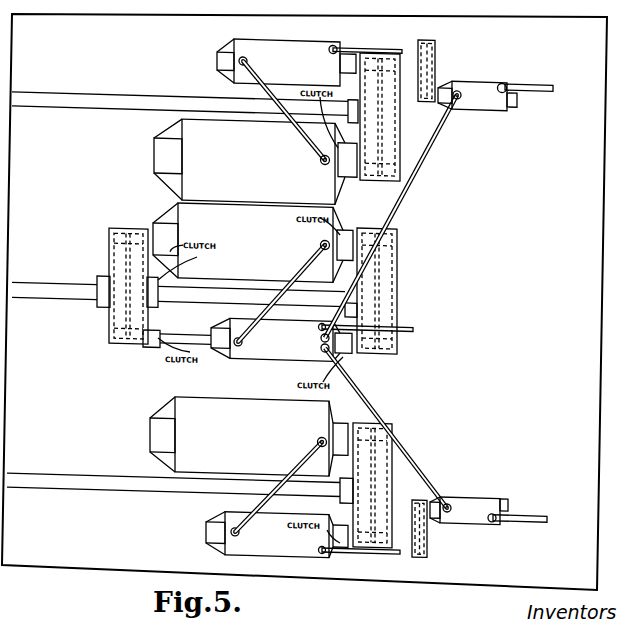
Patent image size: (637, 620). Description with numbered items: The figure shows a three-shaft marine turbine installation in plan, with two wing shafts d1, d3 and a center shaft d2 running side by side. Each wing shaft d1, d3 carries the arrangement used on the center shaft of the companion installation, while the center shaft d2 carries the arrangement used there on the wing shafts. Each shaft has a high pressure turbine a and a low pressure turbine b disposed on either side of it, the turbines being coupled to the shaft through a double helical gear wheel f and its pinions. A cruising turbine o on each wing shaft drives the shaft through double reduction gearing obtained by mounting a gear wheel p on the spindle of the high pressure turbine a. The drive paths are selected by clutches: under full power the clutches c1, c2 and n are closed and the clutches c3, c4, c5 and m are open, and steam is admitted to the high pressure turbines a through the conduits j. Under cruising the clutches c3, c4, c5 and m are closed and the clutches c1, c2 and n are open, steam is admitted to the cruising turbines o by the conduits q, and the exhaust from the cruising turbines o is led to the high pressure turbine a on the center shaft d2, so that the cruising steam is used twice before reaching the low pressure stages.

The high pressure turbine a is at (273, 298).
The low pressure turbine b is at (247, 297).
The clutch c1 is at (341, 70).
The clutch c2 is at (346, 167).
The clutch c3 is at (155, 341).
The clutch c4 is at (163, 227).
The clutch c5 is at (408, 52).
The wing shaft d1 is at (77, 93).
The center shaft d2 is at (62, 297).
The wing shaft d3 is at (57, 483).
The gear wheel f is at (395, 122).
The conduit j is at (400, 32).
The clutch m is at (151, 305).
The clutch n is at (357, 298).
The cruising turbine o is at (473, 302).
The gear wheel p is at (420, 545).
The conduit q is at (551, 77).